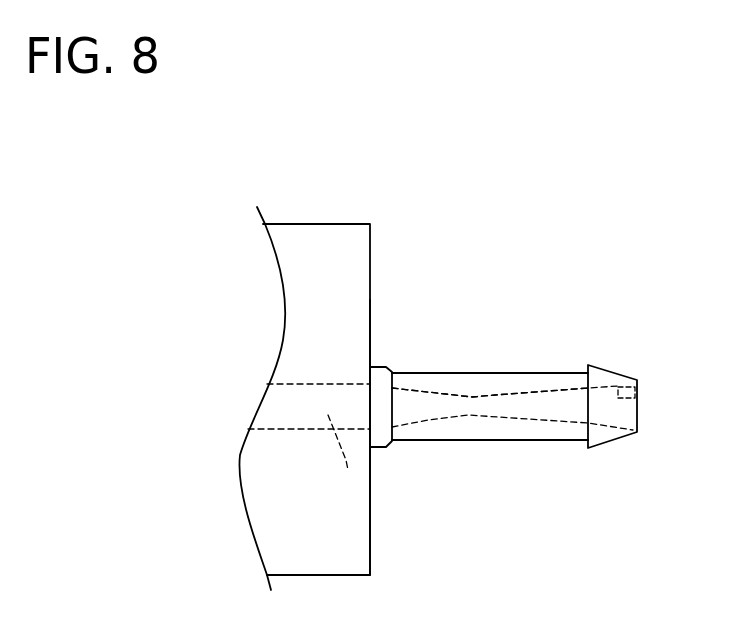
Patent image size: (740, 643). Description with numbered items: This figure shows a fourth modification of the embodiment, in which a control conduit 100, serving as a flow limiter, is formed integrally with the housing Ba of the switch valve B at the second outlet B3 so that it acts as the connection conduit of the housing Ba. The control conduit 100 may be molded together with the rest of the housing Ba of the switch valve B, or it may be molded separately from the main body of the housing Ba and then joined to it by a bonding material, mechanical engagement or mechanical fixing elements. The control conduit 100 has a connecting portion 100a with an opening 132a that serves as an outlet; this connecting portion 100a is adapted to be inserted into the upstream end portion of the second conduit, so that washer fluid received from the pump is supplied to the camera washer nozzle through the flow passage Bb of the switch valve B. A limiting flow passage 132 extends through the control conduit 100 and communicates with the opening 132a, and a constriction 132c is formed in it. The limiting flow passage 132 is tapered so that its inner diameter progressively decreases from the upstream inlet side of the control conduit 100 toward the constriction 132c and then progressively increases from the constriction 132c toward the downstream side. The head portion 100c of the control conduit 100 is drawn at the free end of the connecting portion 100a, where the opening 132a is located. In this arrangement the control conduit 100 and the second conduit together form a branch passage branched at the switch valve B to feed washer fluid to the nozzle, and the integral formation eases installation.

The switch valve B is at (316, 224).
The second outlet B3 is at (371, 367).
The flow passage Bb is at (348, 470).
The housing Ba is at (370, 553).
The control conduit 100 is at (552, 373).
The connecting portion 100a is at (565, 440).
The head portion of fastening member 100c is at (600, 366).
The limiting flow passage 132 is at (428, 413).
The constriction 132c is at (480, 398).
The opening 132a is at (643, 393).